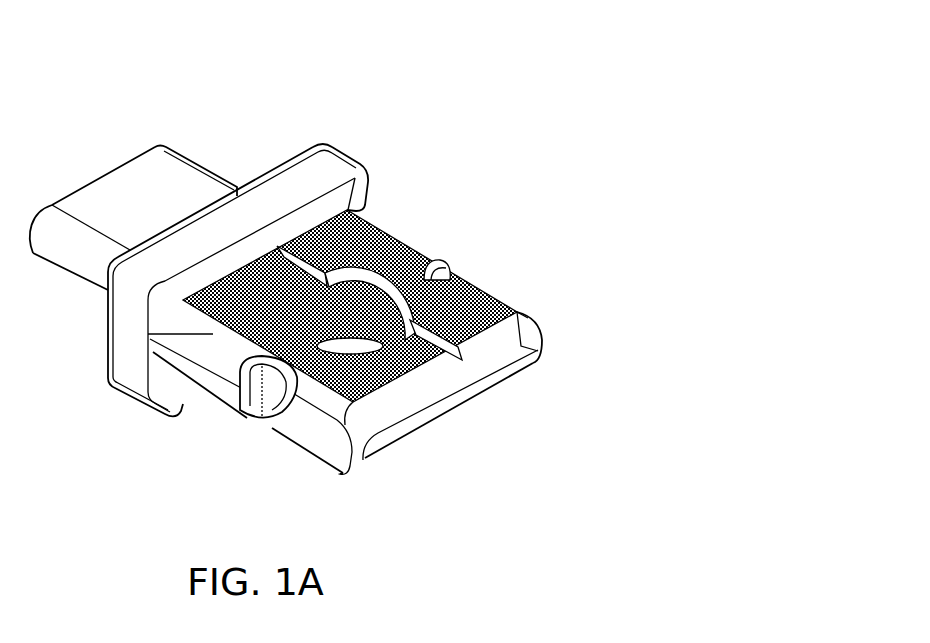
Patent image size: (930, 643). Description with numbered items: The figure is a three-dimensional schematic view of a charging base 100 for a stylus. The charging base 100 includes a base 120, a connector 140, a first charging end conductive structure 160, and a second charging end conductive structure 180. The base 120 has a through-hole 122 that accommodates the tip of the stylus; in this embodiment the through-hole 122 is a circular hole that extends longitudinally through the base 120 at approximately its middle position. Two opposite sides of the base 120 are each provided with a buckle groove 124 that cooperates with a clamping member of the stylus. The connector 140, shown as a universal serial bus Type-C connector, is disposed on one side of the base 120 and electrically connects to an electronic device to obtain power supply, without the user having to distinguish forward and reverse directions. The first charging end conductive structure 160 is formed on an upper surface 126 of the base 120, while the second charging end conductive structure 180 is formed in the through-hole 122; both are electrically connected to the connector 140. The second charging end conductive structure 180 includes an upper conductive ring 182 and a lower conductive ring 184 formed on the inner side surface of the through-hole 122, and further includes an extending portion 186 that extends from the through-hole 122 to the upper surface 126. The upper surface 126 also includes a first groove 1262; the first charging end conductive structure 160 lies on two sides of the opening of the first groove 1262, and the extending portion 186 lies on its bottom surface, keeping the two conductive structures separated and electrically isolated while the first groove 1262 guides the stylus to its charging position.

The charging base 100 is at (323, 266).
The base 120 is at (400, 239).
The through-hole 122 is at (354, 290).
The buckle groove 124 is at (458, 272).
The upper surface 126 is at (210, 336).
The first groove 1262 is at (267, 262).
The connector 140 is at (110, 171).
The first charging end conductive structure 160 is at (480, 305).
The second charging end conductive structure 180 is at (467, 400).
The upper conductive ring 182 is at (350, 356).
The lower conductive ring 184 is at (365, 398).
The extending portion 186 is at (460, 358).